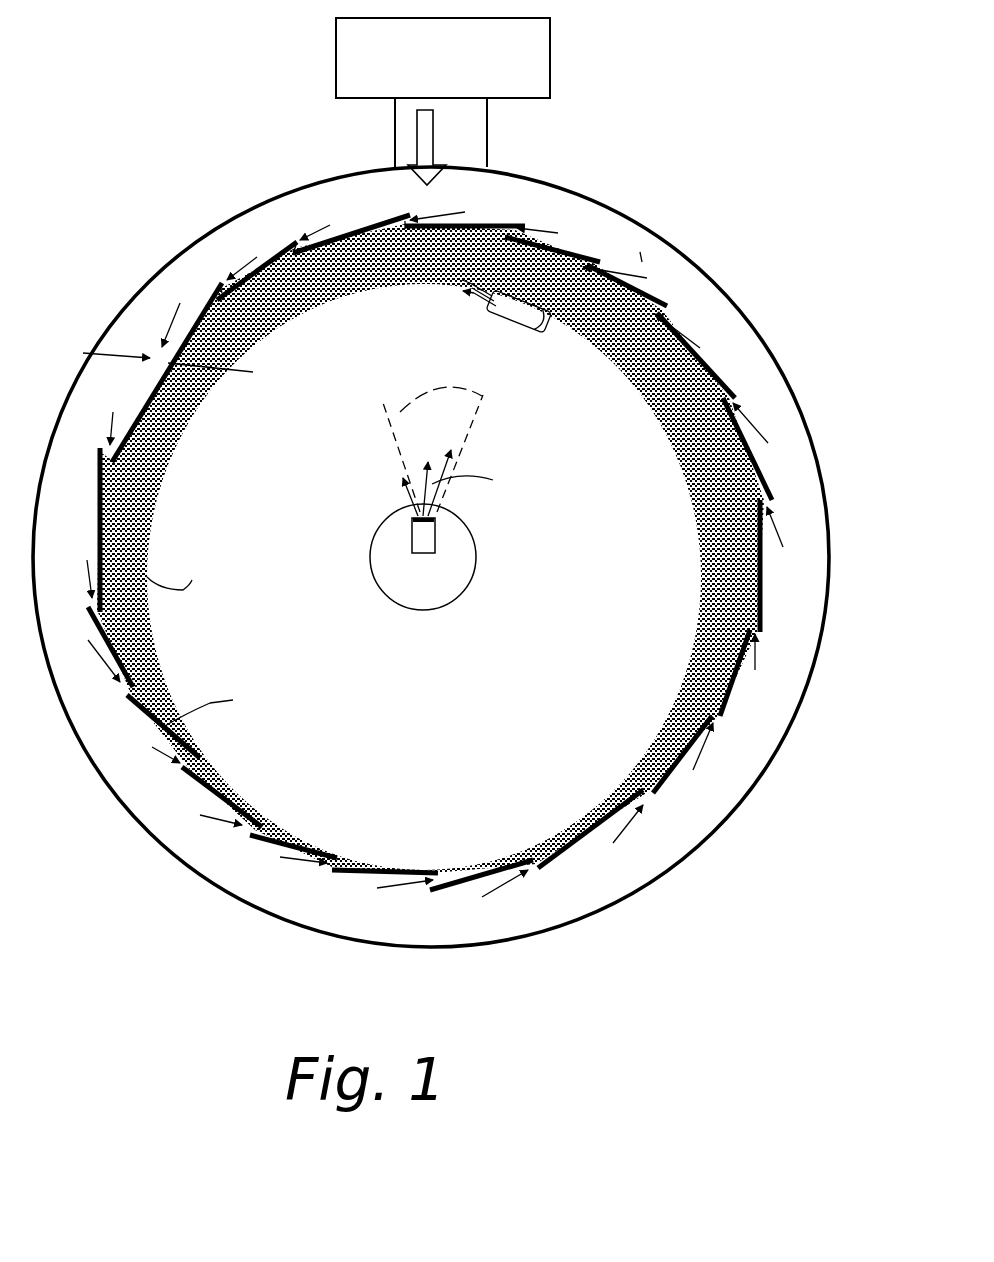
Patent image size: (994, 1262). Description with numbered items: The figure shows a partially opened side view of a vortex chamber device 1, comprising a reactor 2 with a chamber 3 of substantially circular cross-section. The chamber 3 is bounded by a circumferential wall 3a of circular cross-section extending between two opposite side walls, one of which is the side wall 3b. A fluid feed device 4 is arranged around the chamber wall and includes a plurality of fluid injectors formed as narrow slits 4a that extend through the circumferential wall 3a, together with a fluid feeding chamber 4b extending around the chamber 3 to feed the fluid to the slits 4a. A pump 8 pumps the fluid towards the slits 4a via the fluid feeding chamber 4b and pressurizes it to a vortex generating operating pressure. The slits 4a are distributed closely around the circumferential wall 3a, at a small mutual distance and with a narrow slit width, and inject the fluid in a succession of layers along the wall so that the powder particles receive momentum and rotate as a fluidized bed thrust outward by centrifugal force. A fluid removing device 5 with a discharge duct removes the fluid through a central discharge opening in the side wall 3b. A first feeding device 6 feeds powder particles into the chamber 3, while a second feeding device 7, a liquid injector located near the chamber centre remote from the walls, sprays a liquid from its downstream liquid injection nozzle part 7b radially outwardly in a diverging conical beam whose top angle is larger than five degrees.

The vortex chamber device 1 is at (146, 200).
The reactor 2 is at (435, 611).
The chamber 3 is at (360, 877).
The circumferential wall 3a is at (563, 857).
The side wall 3b is at (613, 702).
The fluid feed device 4 is at (814, 436).
The fluid injector slits 4a is at (400, 223).
The fluid feeding chamber 4b is at (640, 252).
The fluid removing device 5 is at (467, 587).
The first feeding device 6 is at (548, 328).
The second feeding device 7 is at (407, 498).
The downstream liquid injection nozzle part 7b is at (415, 533).
The pump 8 is at (527, 80).